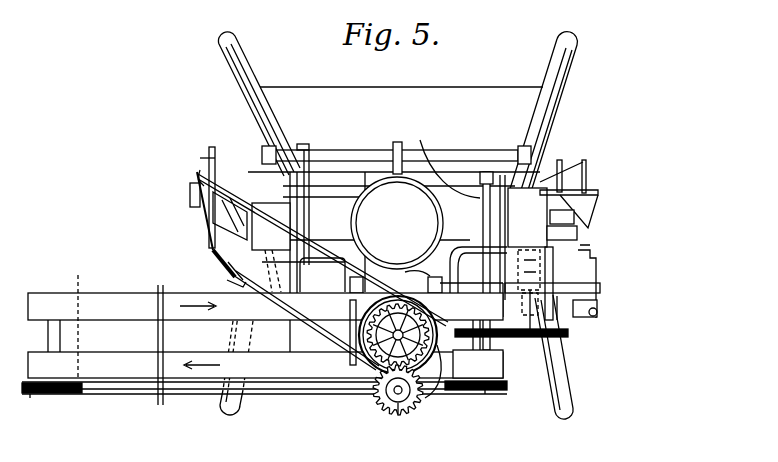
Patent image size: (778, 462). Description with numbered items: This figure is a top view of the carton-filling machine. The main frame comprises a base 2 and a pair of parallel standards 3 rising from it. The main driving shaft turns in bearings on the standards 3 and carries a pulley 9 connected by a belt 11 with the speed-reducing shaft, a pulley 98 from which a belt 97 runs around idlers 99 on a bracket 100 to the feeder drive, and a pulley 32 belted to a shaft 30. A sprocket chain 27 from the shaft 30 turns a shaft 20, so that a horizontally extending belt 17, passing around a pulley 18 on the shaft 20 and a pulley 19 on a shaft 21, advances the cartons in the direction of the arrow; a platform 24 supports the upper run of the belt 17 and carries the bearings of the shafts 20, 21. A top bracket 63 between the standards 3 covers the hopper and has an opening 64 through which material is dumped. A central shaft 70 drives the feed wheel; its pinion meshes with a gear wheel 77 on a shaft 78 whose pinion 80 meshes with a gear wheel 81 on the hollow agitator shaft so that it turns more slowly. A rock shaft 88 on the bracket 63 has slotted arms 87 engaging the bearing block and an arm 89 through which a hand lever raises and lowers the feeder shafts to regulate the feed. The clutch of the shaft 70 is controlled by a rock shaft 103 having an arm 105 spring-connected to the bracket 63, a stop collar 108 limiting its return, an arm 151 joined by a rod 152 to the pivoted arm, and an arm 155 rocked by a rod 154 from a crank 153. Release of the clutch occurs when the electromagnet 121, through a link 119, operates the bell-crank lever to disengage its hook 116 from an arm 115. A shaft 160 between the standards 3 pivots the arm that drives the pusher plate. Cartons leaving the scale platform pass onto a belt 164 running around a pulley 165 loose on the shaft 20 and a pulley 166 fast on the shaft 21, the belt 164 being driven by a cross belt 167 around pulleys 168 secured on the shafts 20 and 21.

The base 2 is at (240, 86).
The standards 3 is at (399, 219).
The pulley 9 is at (208, 150).
The belt 11 is at (200, 158).
The belt 17 is at (105, 311).
The pulley 18 is at (450, 300).
The pulley 19 is at (65, 316).
The shaft 20 is at (483, 378).
The shaft 21 is at (63, 393).
The platform 24 is at (125, 300).
The sprocket chain 27 is at (568, 337).
The shaft 30 is at (528, 315).
The pulley 32 is at (584, 168).
The top bracket 63 is at (343, 296).
The opening 64 is at (397, 223).
The central shaft 70 is at (383, 376).
The gear wheel 77 is at (399, 428).
The shaft 78 is at (400, 413).
The pinion 80 is at (420, 392).
The gear wheel 81 is at (368, 358).
The arms 87 is at (362, 372).
The rock shaft 88 is at (413, 273).
The arm 89 is at (349, 358).
The belt 97 is at (202, 238).
The pulley 98 is at (197, 176).
The idlers 99 is at (226, 158).
The bracket 100 is at (207, 244).
The rock shaft 103 is at (260, 324).
The arm 105 is at (422, 149).
The stop collar 108 is at (463, 153).
The arm 115 is at (550, 148).
The hook 116 is at (563, 155).
The link 119 is at (593, 208).
The electromagnet 121 is at (590, 226).
The arm 151 is at (556, 321).
The rod 152 is at (600, 268).
The crank 153 is at (597, 254).
The rod 154 is at (590, 288).
The arm 155 is at (558, 302).
The shaft 160 is at (340, 158).
The belt 164 is at (133, 381).
The pulley 165 is at (445, 388).
The pulley 166 is at (88, 378).
The cross belt 167 is at (248, 410).
The pulleys 168 is at (35, 395).